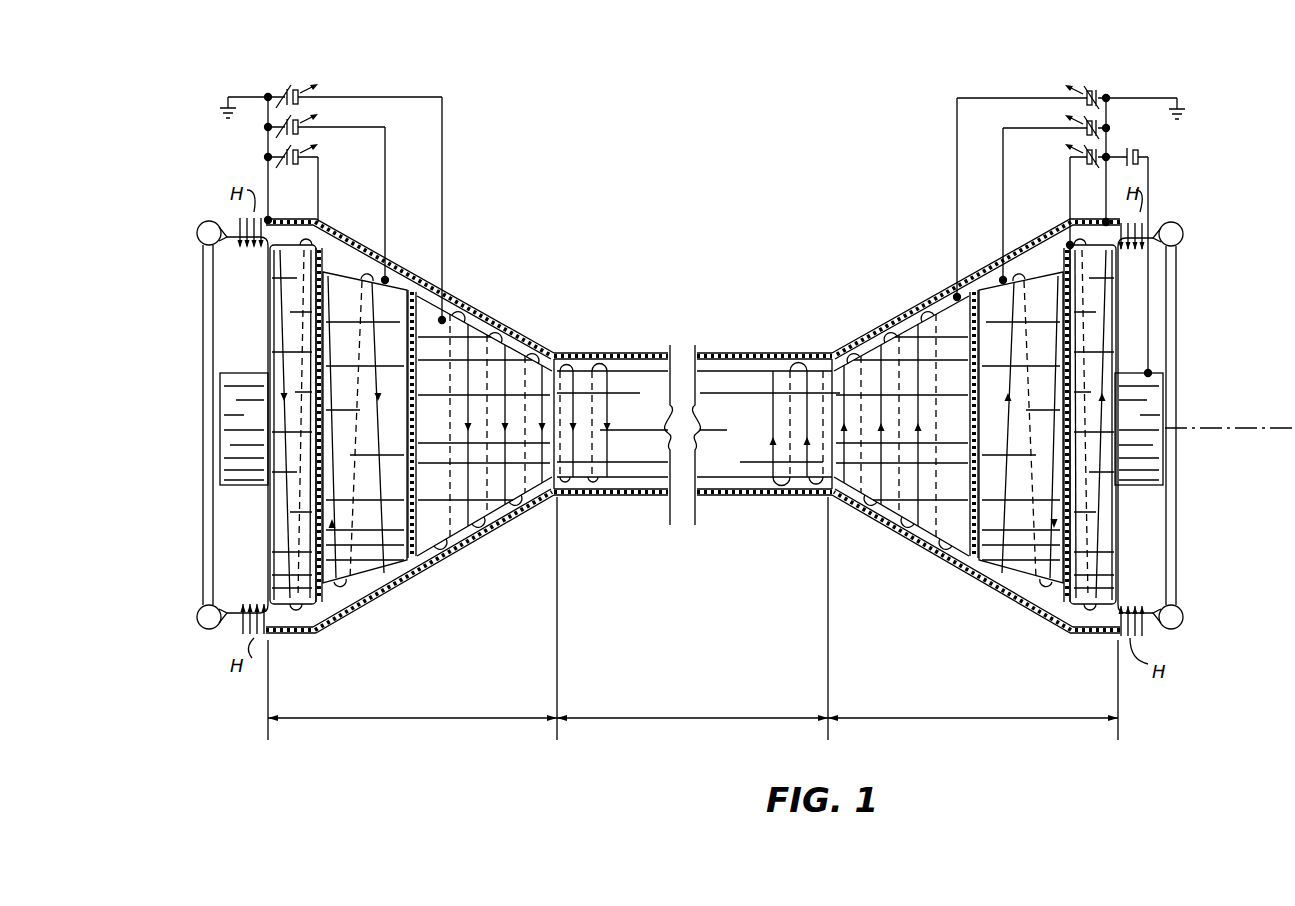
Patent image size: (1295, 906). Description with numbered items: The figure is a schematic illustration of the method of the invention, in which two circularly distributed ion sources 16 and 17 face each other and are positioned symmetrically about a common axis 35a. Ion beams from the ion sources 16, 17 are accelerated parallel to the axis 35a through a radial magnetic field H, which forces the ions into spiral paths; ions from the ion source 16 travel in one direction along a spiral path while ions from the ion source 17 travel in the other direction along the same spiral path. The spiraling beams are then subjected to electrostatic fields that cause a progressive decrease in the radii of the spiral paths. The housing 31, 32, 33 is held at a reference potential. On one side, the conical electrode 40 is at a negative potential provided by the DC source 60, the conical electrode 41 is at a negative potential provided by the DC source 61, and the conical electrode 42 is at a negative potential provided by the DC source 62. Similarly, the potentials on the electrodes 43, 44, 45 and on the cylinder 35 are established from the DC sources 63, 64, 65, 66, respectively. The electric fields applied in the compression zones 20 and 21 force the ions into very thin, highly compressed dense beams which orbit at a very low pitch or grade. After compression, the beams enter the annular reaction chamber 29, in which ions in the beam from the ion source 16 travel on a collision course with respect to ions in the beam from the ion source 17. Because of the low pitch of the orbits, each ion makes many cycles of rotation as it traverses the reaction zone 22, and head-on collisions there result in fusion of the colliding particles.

The ion source 16 is at (206, 332).
The ion source 17 is at (1181, 312).
The compression zone 20 is at (423, 751).
The compression zone 21 is at (989, 751).
The reaction zone 22 is at (706, 751).
The annular reaction chamber 29 is at (746, 366).
The housing 31 is at (425, 573).
The housing 32 is at (646, 497).
The housing 33 is at (937, 562).
The cylinder 35 is at (222, 448).
The common axis 35a is at (1246, 427).
The conical electrode 40 is at (322, 634).
The conical electrode 41 is at (373, 580).
The conical electrode 42 is at (470, 522).
The electrode 43 is at (1068, 631).
The electrode 44 is at (988, 586).
The electrode 45 is at (866, 500).
The DC source 60 is at (320, 158).
The DC source 61 is at (318, 112).
The DC source 62 is at (318, 82).
The DC source 63 is at (1112, 152).
The DC source 64 is at (1111, 122).
The DC source 65 is at (1111, 92).
The DC source 66 is at (1135, 166).